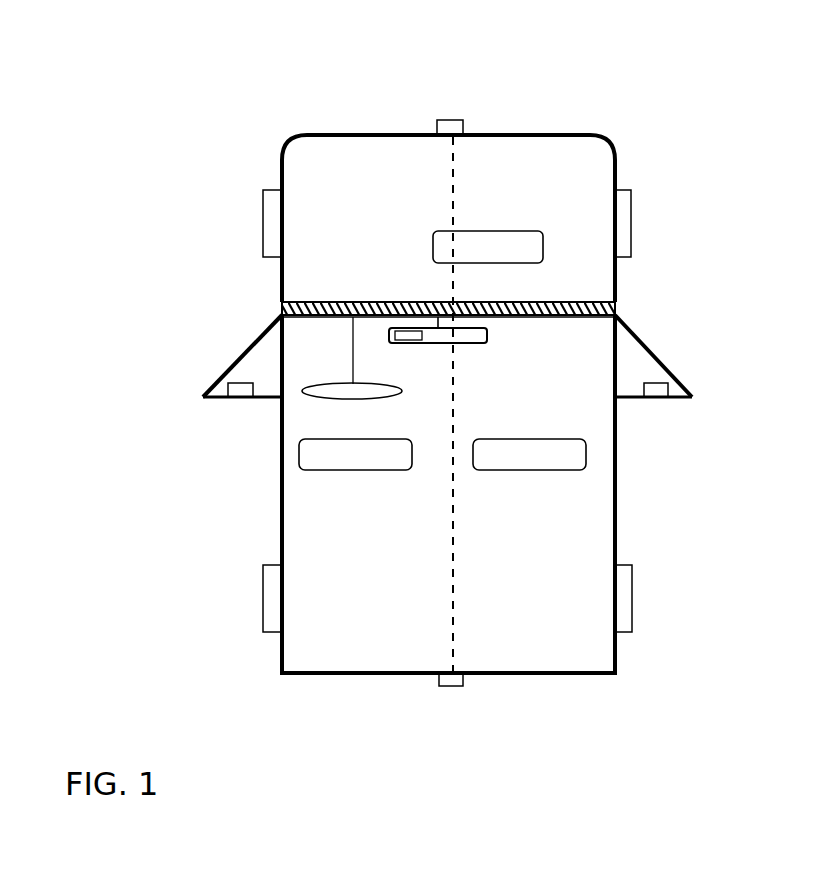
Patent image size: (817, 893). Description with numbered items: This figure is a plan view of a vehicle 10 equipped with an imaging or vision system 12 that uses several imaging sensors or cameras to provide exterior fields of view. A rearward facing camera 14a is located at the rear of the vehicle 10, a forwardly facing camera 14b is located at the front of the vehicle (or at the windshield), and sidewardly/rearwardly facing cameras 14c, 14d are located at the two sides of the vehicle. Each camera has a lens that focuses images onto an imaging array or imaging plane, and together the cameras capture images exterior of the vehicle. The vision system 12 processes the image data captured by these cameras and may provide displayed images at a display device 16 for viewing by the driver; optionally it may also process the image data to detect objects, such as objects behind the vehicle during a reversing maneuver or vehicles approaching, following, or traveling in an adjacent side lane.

The vehicle 10 is at (210, 148).
The vision system 12 is at (551, 198).
The rearward facing camera 14a is at (452, 686).
The forwardly facing camera 14b is at (448, 121).
The sidewardly/rearwardly facing camera 14c is at (238, 390).
The sidewardly/rearwardly facing camera 14d is at (657, 390).
The display device 16 is at (404, 328).